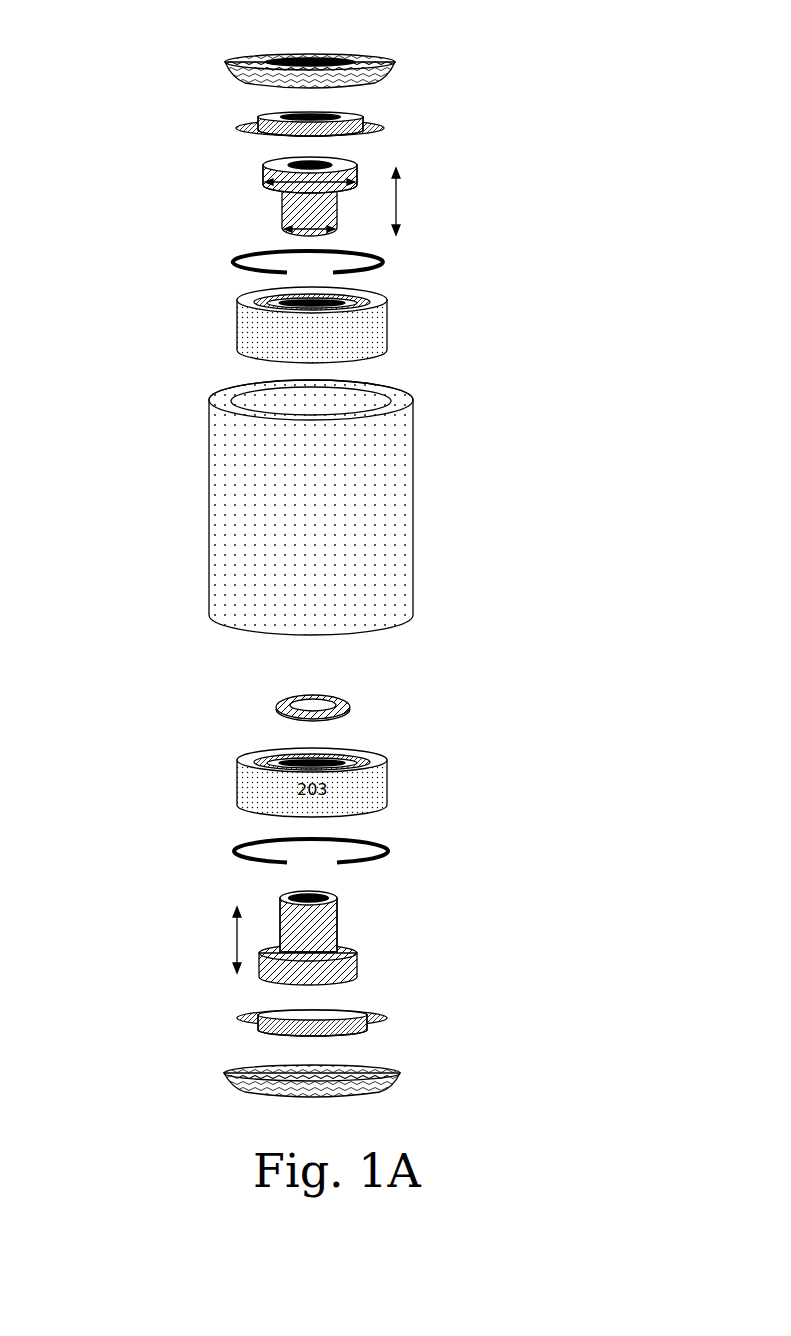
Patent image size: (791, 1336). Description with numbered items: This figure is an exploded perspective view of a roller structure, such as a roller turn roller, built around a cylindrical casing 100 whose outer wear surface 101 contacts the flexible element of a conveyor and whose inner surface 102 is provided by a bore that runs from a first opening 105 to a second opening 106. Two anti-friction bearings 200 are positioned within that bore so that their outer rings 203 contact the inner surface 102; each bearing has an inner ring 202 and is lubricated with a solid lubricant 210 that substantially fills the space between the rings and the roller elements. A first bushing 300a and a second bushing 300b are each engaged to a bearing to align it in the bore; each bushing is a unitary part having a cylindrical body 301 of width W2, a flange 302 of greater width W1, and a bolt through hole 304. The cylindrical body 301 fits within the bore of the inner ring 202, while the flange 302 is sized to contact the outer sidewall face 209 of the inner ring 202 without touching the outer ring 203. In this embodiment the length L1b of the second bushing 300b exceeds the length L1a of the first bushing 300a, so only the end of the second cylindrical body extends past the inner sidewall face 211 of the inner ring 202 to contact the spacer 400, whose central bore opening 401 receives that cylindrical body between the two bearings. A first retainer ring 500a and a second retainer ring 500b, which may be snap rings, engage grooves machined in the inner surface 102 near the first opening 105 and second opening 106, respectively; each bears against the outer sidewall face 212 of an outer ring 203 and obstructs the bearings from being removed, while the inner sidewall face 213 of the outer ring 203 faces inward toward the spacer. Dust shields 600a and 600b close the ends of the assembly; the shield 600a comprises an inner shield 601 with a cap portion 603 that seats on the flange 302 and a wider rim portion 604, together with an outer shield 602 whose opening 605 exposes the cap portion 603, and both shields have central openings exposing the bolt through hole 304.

The cylindrical casing 100 is at (326, 491).
The outer wear surface 101 is at (262, 505).
The inner surface 102 is at (242, 386).
The first opening 105 is at (322, 390).
The second opening 106 is at (312, 650).
The anti-friction bearing 200 is at (309, 287).
The inner ring 202 is at (257, 302).
The outer ring 203 is at (312, 331).
The outer sidewall face 209 is at (348, 300).
The solid lubricant 210 is at (250, 299).
The inner sidewall face 211 is at (356, 755).
The outer sidewall face 212 is at (378, 298).
The inner sidewall face 213 is at (382, 755).
The first bushing 300a is at (261, 171).
The second bushing 300b is at (315, 965).
The cylindrical body 301 is at (214, 210).
The flange 302 is at (296, 163).
The bolt through hole 304 is at (288, 166).
The spacer 400 is at (265, 684).
The bore opening 401 is at (323, 697).
The first retainer ring 500a is at (234, 261).
The second retainer ring 500b is at (237, 850).
The dust shield 600a is at (313, 72).
The dust shield 600b is at (387, 1029).
The inner shield 601 is at (262, 97).
The outer shield 602 is at (339, 45).
The cap portion 603 is at (260, 117).
The rim portion 604 is at (240, 127).
The opening 605 is at (343, 60).
The width of flange W1 is at (330, 178).
The width of cylindrical body W2 is at (281, 228).
The length of first bushing L1a is at (398, 200).
The length of second bushing L1b is at (237, 940).